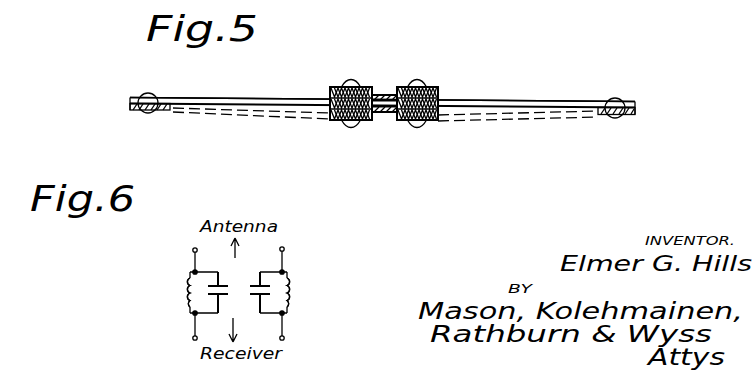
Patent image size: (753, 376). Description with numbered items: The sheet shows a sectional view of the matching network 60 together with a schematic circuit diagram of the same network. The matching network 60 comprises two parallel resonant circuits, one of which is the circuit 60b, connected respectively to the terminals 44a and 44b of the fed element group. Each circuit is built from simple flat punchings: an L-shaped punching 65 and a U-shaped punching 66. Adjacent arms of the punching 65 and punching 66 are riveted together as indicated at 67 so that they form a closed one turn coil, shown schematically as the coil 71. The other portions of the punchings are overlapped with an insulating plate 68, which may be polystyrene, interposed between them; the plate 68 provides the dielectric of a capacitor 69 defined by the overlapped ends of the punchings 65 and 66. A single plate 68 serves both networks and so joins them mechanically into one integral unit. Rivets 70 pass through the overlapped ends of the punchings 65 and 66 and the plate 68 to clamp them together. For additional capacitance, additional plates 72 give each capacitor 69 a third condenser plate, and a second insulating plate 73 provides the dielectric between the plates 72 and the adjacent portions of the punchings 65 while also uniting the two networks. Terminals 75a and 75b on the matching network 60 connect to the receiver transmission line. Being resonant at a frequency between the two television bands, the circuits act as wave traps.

In FIG. 5, the matching network 60 is at (492, 93).
In FIG. 6, the matching network 60 is at (145, 296).
In FIG. 5, the L-shaped punching 65 is at (219, 80).
In FIG. 5, the U-shaped punching 66 is at (168, 109).
In FIG. 5, the rivet 67 is at (149, 93).
In FIG. 5, the insulating plate 68 is at (383, 113).
In FIG. 5, the rivets 70 is at (352, 80).
In FIG. 5, the additional plate 72 is at (338, 86).
In FIG. 5, the second insulating plate 73 is at (383, 95).
In FIG. 6, the terminal 44a is at (285, 249).
In FIG. 6, the terminal 44b is at (192, 249).
In FIG. 6, the parallel resonant circuit 60b is at (184, 282).
In FIG. 6, the capacitor 69 is at (225, 284).
In FIG. 6, the one turn coil 71 is at (184, 305).
In FIG. 6, the terminal 75a is at (285, 338).
In FIG. 6, the terminal 75b is at (192, 338).